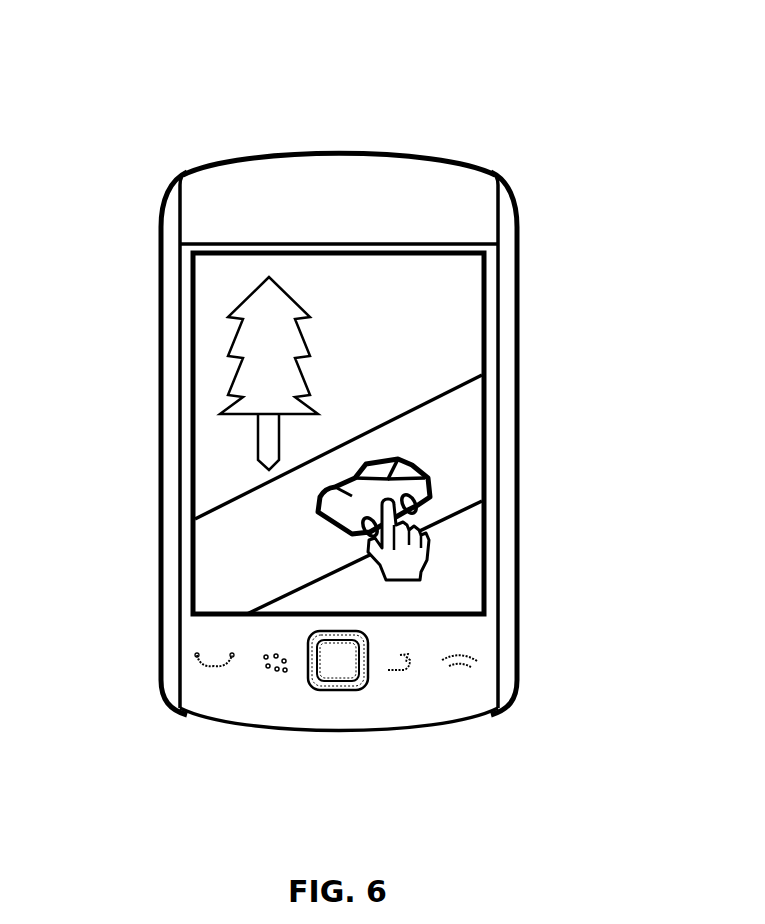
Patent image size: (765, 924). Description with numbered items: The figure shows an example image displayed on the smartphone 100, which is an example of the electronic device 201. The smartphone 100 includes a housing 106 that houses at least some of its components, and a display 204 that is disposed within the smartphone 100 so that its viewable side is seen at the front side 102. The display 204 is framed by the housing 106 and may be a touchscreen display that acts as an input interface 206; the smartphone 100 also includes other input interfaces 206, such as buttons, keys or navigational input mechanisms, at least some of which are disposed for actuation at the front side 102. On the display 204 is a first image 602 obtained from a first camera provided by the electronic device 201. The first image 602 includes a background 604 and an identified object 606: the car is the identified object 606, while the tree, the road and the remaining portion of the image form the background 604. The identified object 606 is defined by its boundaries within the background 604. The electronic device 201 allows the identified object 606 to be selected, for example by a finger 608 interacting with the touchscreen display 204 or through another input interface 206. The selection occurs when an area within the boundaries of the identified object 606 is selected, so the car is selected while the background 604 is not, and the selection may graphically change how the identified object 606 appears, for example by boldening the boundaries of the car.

The smartphone 100 is at (346, 386).
The electronic device 201 is at (236, 133).
The front side 102 is at (185, 633).
The housing 106 is at (518, 282).
The display 204 is at (193, 363).
The input interface 206 is at (195, 466).
The first image 602 is at (485, 341).
The background 604 is at (467, 597).
The identified object 606 is at (427, 476).
The finger 608 is at (430, 553).